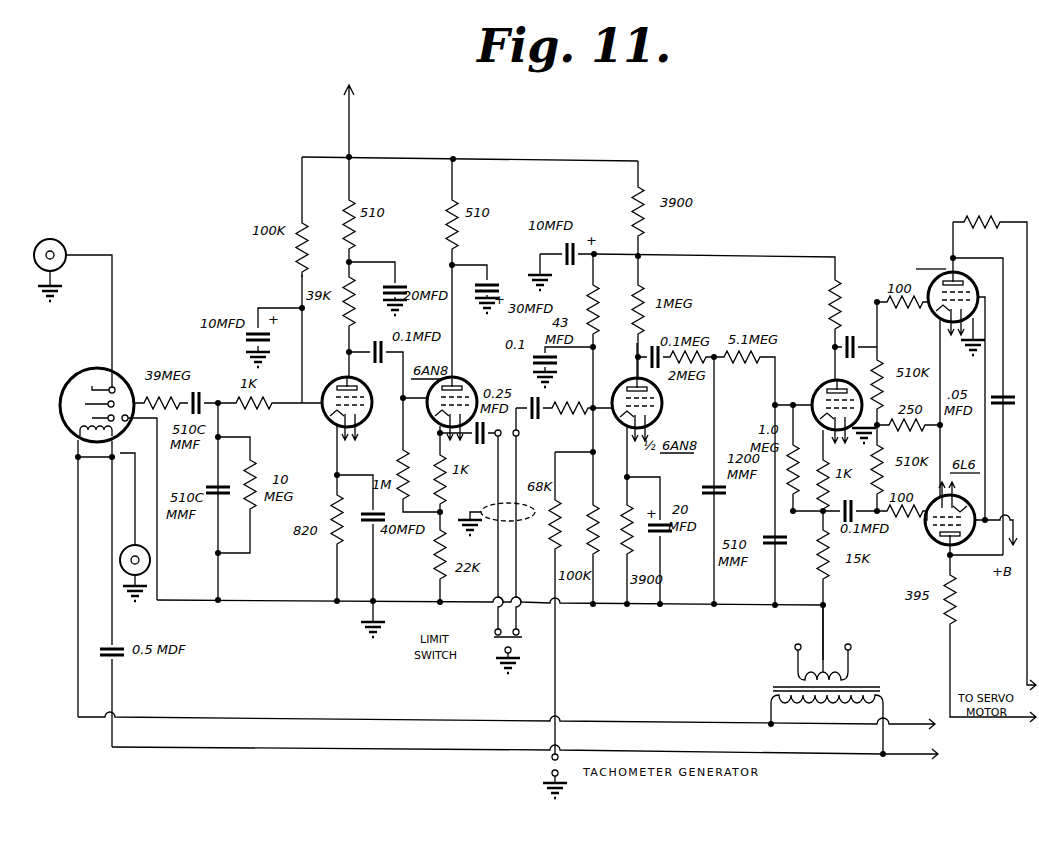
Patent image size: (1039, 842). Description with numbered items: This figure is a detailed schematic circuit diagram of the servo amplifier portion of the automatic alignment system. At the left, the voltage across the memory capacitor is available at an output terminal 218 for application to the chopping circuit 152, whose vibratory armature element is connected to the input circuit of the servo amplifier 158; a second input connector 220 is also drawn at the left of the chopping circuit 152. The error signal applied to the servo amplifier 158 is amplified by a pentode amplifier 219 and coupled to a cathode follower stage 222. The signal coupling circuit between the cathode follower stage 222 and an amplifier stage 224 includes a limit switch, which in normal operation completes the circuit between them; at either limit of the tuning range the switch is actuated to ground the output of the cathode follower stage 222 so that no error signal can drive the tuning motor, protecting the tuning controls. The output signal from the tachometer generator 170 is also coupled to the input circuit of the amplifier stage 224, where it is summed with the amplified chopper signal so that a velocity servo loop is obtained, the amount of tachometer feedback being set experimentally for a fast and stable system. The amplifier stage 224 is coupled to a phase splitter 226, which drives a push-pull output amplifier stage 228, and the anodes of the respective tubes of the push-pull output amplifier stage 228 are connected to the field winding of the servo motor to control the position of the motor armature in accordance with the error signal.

The output terminal 218 is at (62, 240).
The chopping circuit 152 is at (139, 241).
The servo amplifier 158 is at (545, 137).
The pentode amplifier 219 is at (335, 368).
The cathode follower stage 222 is at (468, 385).
The amplifier stage 224 is at (662, 404).
The phase splitter 226 is at (841, 250).
The push-pull output amplifier stage 228 is at (947, 240).
The connector 220 is at (150, 560).
The tachometer generator 170 is at (550, 766).